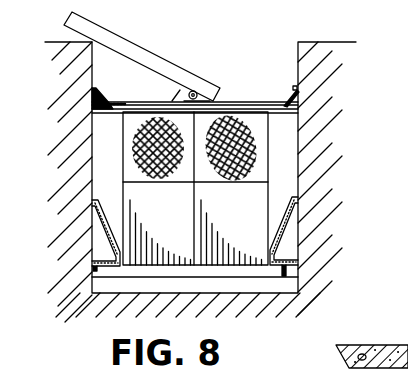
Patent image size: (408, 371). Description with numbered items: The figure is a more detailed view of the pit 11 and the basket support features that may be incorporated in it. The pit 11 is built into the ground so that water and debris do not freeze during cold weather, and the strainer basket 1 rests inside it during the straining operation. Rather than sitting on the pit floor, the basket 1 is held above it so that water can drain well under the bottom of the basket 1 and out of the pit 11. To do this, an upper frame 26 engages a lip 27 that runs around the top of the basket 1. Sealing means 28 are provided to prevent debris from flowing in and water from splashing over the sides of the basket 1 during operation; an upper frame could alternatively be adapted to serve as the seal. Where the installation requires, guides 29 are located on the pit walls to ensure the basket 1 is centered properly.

The strainer basket 1 is at (269, 177).
The pit 11 is at (317, 42).
The upper frame 26 is at (110, 113).
The lip 27 is at (279, 102).
The sealing means 28 is at (288, 103).
The guides 29 is at (286, 236).